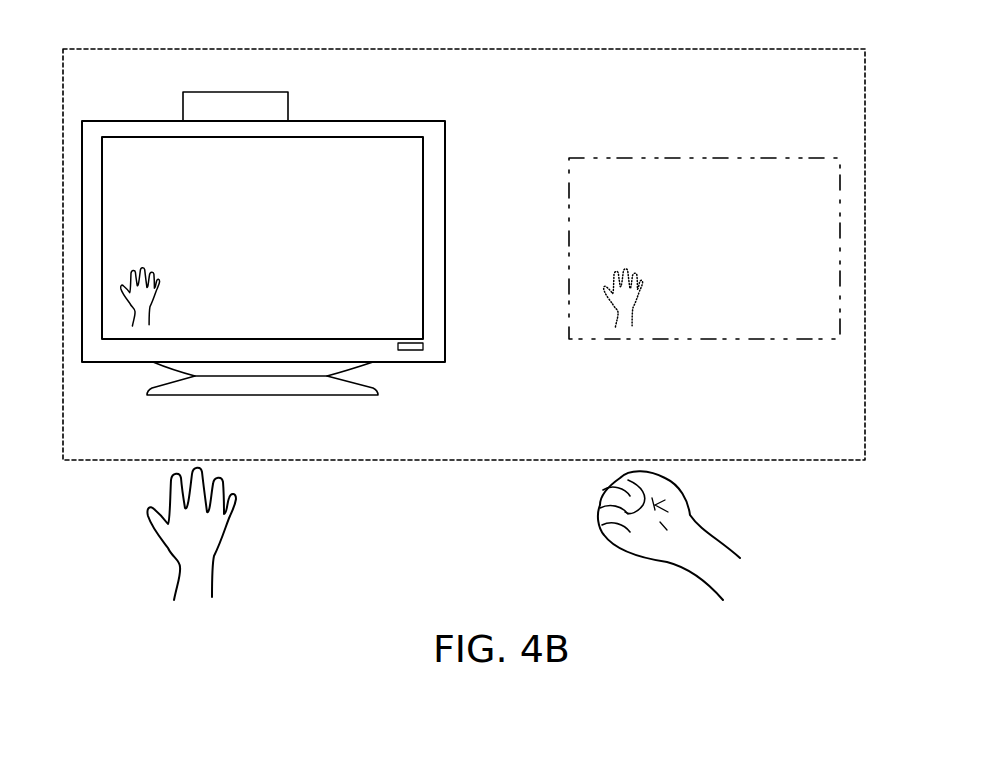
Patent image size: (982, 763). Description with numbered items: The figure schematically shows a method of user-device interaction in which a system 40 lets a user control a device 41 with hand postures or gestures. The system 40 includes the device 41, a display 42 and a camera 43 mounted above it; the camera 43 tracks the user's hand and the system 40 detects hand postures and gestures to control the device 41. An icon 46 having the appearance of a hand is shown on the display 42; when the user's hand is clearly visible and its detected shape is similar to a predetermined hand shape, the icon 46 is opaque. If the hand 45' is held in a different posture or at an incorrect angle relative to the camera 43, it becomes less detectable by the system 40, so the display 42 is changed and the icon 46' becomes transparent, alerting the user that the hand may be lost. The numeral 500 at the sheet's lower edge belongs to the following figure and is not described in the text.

The system 40 is at (793, 33).
The device 41 is at (433, 121).
The display 42 is at (353, 143).
The camera 43 is at (225, 92).
The hand 45' is at (687, 535).
The icon 46 is at (215, 434).
The icon 46' is at (657, 298).
The process 500 is at (126, 762).